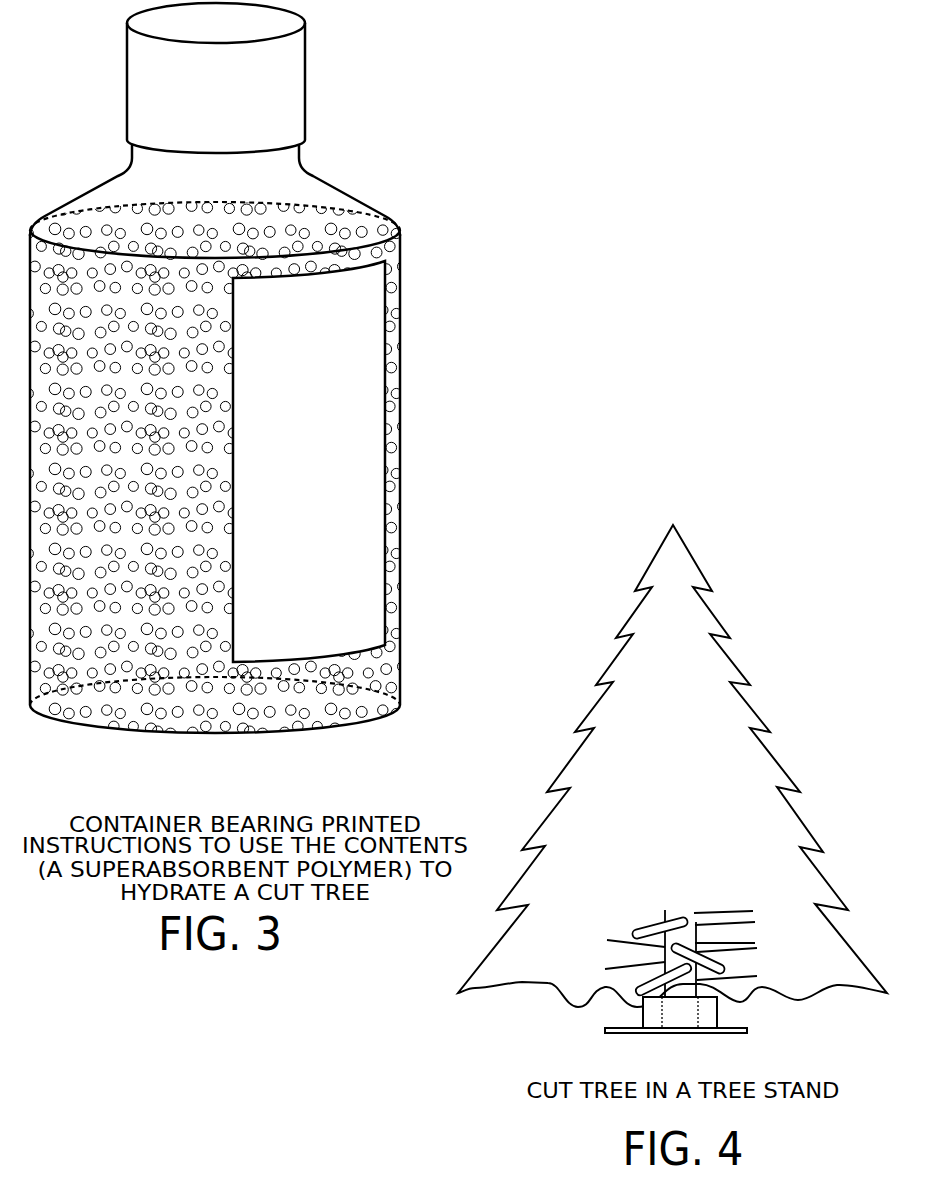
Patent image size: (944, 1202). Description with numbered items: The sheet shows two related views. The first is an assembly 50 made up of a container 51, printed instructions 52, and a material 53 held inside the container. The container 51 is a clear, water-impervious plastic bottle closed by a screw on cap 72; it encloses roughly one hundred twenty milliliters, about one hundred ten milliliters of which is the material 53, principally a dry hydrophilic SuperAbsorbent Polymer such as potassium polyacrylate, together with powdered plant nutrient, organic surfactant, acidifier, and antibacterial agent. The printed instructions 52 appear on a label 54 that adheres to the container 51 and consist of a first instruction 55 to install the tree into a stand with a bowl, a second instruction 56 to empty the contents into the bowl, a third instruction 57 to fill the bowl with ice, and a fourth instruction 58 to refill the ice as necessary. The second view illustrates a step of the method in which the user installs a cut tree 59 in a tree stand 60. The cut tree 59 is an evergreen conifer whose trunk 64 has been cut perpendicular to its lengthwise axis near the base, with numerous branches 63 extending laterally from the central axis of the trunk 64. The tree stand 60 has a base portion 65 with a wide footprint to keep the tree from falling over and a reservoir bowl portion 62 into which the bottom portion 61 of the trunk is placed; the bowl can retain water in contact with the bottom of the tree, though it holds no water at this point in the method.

In FIG. 3, the assembly 50 is at (258, 393).
In FIG. 3, the container 51 is at (342, 191).
In FIG. 3, the printed instructions 52 is at (364, 544).
In FIG. 3, the material 53 is at (87, 394).
In FIG. 3, the label 54 is at (389, 397).
In FIG. 3, the first instruction 55 is at (285, 649).
In FIG. 3, the second instruction 56 is at (305, 649).
In FIG. 3, the third instruction 57 is at (330, 645).
In FIG. 3, the fourth instruction 58 is at (352, 645).
In FIG. 3, the screw on cap 72 is at (305, 97).
In FIG. 4, the cut tree 59 is at (782, 769).
In FIG. 4, the tree stand 60 is at (700, 1032).
In FIG. 4, the bottom portion of the trunk 61 is at (668, 1020).
In FIG. 4, the reservoir bowl portion 62 is at (643, 1013).
In FIG. 4, the branches 63 is at (615, 940).
In FIG. 4, the trunk 64 is at (680, 916).
In FIG. 4, the base portion 65 is at (727, 1034).